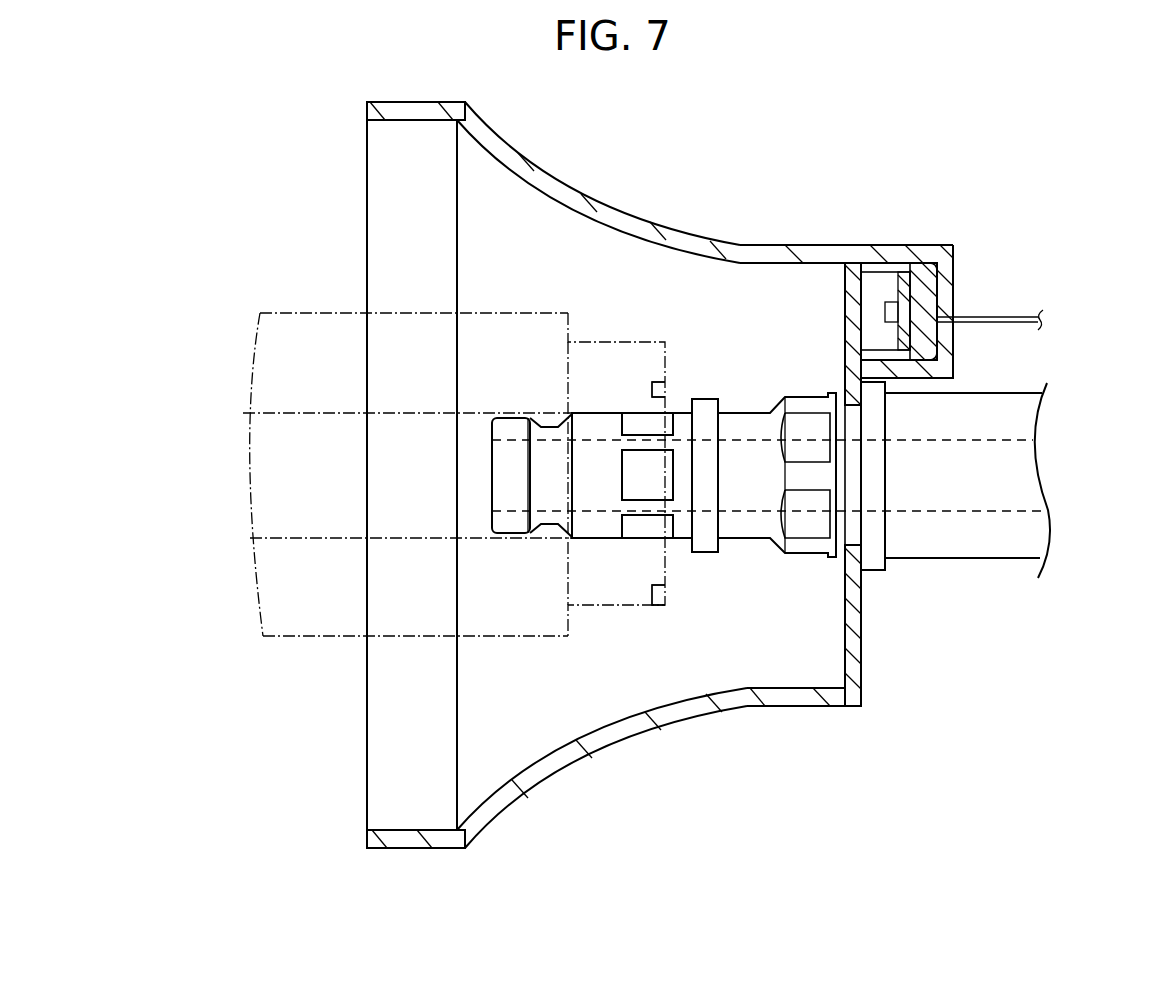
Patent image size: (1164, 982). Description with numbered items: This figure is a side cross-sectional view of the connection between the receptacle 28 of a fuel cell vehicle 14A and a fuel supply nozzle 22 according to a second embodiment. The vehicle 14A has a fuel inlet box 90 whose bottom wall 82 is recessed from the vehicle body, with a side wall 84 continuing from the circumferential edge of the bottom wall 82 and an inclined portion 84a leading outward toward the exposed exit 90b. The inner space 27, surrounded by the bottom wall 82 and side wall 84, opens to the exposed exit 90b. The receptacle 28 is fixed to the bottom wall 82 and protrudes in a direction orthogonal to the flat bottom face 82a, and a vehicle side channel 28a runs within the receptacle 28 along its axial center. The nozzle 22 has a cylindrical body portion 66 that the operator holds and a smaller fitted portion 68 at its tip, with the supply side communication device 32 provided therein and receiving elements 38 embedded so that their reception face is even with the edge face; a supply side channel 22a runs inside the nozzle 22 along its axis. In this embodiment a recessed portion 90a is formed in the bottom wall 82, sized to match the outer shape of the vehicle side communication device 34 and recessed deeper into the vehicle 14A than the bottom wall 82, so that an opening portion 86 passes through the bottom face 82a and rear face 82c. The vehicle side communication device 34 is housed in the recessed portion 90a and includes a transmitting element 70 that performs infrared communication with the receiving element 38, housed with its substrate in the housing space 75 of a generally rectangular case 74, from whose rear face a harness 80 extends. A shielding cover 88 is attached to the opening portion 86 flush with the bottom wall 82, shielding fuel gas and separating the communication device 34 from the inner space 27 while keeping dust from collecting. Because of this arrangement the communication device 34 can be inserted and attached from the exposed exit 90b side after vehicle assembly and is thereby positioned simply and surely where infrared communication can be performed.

The fuel cell vehicle 14A is at (355, 126).
The nozzle 22 is at (230, 376).
The supply side channel 22a is at (315, 535).
The inner space 27 is at (523, 745).
The receptacle 28 is at (1063, 381).
The vehicle side channel 28a is at (960, 510).
The supply side communication device 32 is at (710, 497).
The vehicle side communication device 34 is at (937, 258).
The receiving element 38 is at (668, 592).
The body portion 66 is at (336, 312).
The fitted portion 68 is at (598, 342).
The transmitting element 70 is at (885, 313).
The case 74 is at (925, 300).
The housing space 75 is at (890, 340).
The harness 80 is at (1010, 315).
The bottom wall 82 is at (852, 632).
The bottom face 82a is at (848, 664).
The rear face 82c is at (864, 683).
The side wall 84 is at (410, 100).
The inclined wall portion 84a is at (553, 172).
The opening portion 86 is at (848, 262).
The shielding cover 88 is at (857, 296).
The fuel inlet box 90 is at (752, 181).
The recessed portion 90a is at (928, 283).
The exposed exit 90b is at (367, 716).